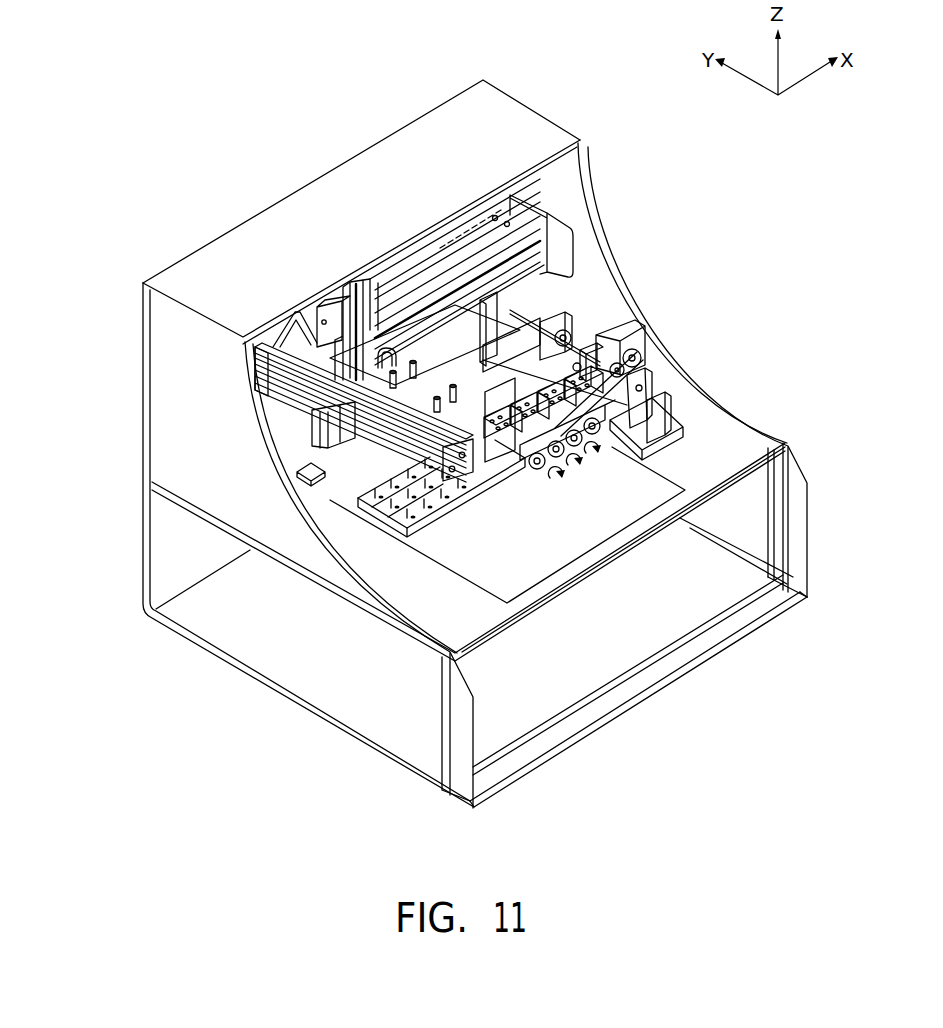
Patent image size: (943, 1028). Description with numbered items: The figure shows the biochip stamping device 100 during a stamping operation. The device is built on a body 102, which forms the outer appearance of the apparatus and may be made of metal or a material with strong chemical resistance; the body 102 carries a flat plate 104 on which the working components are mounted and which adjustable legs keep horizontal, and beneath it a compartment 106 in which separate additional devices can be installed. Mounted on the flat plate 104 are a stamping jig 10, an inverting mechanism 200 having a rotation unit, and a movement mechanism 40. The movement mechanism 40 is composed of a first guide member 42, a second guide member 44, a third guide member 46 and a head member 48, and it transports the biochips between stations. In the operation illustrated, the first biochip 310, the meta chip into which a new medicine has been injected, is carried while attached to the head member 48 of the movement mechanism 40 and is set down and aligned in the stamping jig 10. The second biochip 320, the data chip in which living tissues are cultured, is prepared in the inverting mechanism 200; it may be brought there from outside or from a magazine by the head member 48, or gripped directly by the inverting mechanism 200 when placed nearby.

The biochip stamping device 100 is at (508, 419).
The body 102 is at (798, 517).
The flat plate 104 is at (722, 441).
The compartment 106 is at (673, 628).
The stamping jig 10 is at (366, 525).
The movement mechanism 40 is at (262, 383).
The first guide member 42 is at (425, 267).
The second guide member 44 is at (268, 523).
The third guide member 46 is at (355, 310).
The head member 48 is at (449, 363).
The inverting mechanism 200 is at (598, 348).
The first biochip 310 is at (392, 519).
The second biochip 320 is at (577, 365).